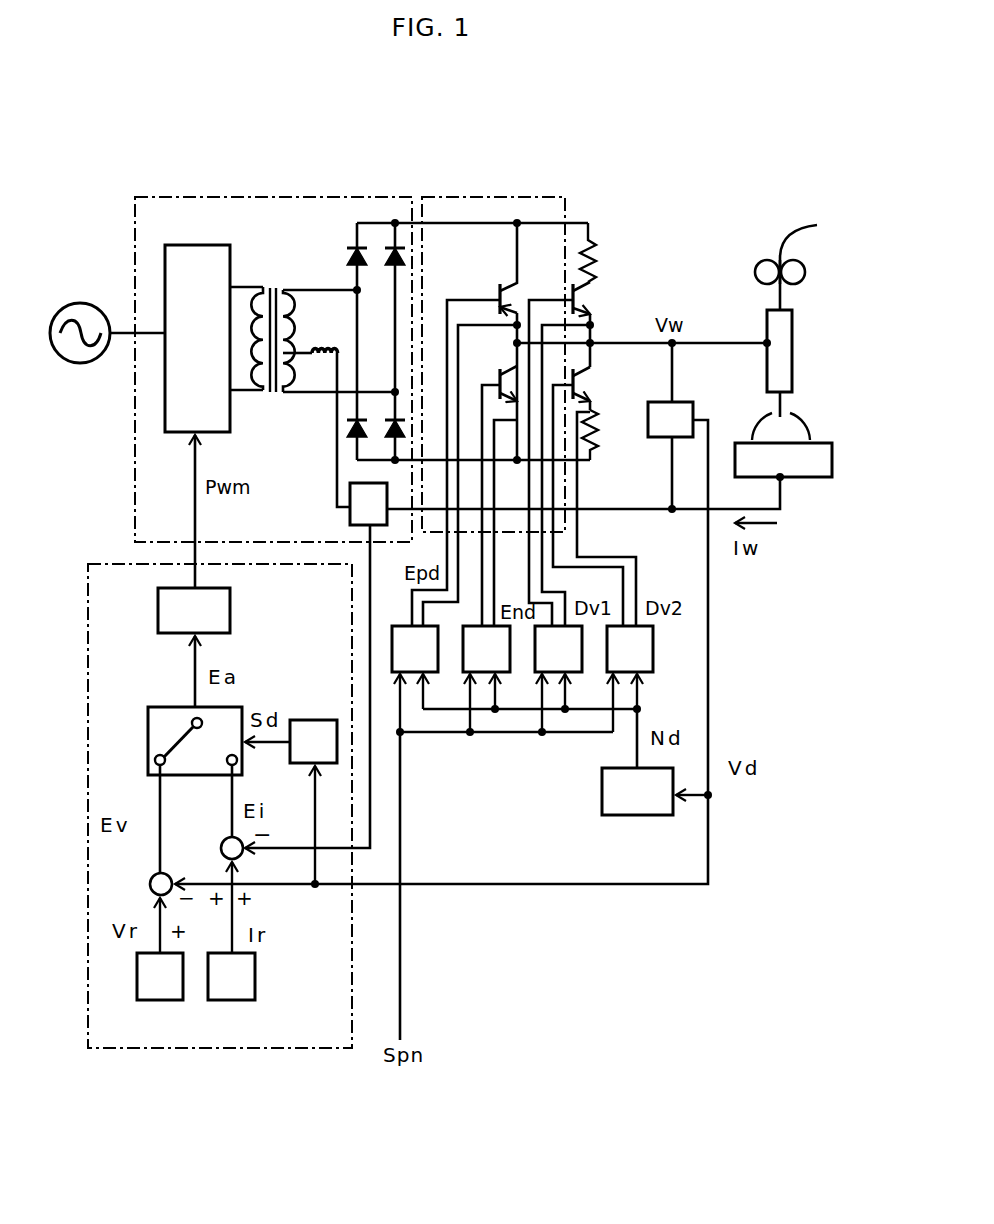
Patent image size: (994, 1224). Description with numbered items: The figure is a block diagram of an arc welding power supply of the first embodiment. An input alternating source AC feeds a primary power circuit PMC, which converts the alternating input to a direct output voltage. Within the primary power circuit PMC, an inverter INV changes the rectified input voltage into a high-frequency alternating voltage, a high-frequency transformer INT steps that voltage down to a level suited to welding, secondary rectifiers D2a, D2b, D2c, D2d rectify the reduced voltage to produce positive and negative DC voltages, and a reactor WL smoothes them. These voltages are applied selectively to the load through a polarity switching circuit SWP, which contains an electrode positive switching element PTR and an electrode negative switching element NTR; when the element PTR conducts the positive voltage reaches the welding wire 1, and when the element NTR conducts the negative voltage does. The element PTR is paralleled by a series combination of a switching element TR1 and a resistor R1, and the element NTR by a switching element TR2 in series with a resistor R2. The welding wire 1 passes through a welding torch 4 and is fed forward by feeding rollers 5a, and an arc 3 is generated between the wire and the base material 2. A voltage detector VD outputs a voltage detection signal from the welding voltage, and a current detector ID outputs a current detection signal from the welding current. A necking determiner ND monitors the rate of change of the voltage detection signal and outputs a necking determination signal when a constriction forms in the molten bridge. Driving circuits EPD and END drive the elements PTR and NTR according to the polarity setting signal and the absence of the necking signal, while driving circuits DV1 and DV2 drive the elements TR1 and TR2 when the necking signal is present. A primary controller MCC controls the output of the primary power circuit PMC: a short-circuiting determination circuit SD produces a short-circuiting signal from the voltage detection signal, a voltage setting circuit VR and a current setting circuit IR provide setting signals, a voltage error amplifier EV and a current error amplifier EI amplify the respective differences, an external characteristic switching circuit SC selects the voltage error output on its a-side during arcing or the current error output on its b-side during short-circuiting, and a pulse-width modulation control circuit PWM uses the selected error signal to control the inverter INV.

The welding wire 1 is at (787, 406).
The base material 2 is at (815, 480).
The arc 3 is at (755, 428).
The welding torch 4 is at (767, 318).
The feeding rollers 5a is at (758, 268).
The primary power circuit PMC is at (135, 245).
The inverter INV is at (207, 245).
The high-frequency transformer INT is at (268, 288).
The AC power source AC is at (78, 303).
The secondary rectifier D2a is at (348, 258).
The secondary rectifier D2b is at (378, 252).
The secondary rectifier D2c is at (387, 433).
The secondary rectifier D2d is at (347, 430).
The reactor WL is at (336, 333).
The polarity switching circuit SWP is at (556, 197).
The electrode positive switching element PTR is at (464, 424).
The electrode negative switching element NTR is at (491, 486).
The switching element TR1 is at (591, 454).
The switching element TR2 is at (601, 496).
The resistor R1 is at (611, 252).
The resistor R2 is at (609, 435).
The voltage detector VD is at (441, 613).
The current detector ID is at (512, 662).
The driving circuit EPD is at (415, 649).
The driving circuit END is at (486, 649).
The driving circuit DV1 is at (558, 649).
The driving circuit DV2 is at (630, 649).
The necking determiner ND is at (655, 762).
The primary controller MCC is at (88, 572).
The pulse-width modulation control circuit PWM is at (194, 534).
The external characteristic switching circuit SC is at (171, 741).
The short-circuiting determination circuit SD is at (291, 802).
The voltage error amplifier EV is at (136, 885).
The current error amplifier EI is at (209, 849).
The voltage setting circuit VR is at (160, 949).
The current setting circuit IR is at (231, 931).